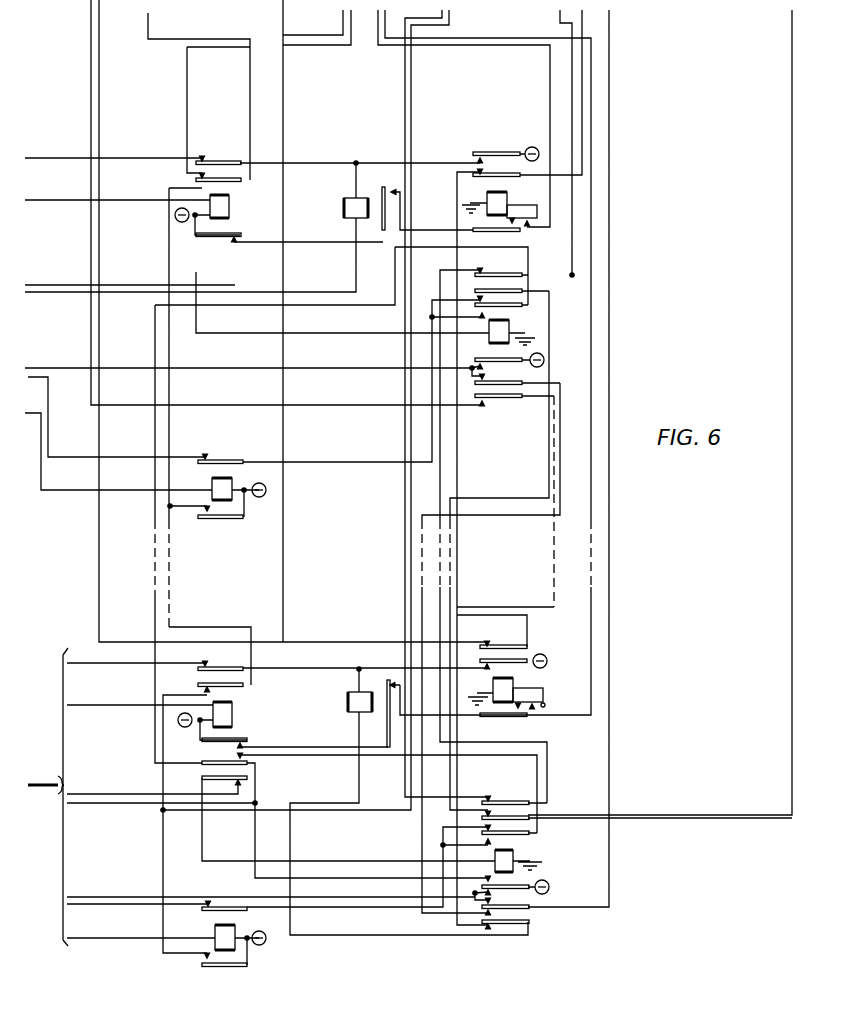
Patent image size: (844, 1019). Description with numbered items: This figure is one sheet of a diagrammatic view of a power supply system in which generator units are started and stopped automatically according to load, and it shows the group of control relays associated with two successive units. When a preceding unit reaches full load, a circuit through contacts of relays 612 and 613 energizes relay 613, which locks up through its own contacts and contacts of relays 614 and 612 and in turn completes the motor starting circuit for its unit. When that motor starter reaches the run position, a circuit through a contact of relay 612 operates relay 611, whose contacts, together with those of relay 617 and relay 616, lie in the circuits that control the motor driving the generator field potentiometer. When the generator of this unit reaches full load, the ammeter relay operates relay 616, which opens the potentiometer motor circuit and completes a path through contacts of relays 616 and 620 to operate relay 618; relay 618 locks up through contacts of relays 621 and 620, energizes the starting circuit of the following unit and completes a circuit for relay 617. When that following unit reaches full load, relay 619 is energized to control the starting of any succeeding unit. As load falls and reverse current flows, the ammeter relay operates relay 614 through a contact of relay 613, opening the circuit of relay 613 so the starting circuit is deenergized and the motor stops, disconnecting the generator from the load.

The relay 611 is at (509, 322).
The relay 612 is at (229, 200).
The relay 613 is at (507, 194).
The relay 614 is at (343, 200).
The relay 616 is at (213, 480).
The relay 617 is at (513, 852).
The relay 618 is at (498, 702).
The relay 619 is at (214, 929).
The relay 620 is at (232, 708).
The relay 621 is at (348, 701).